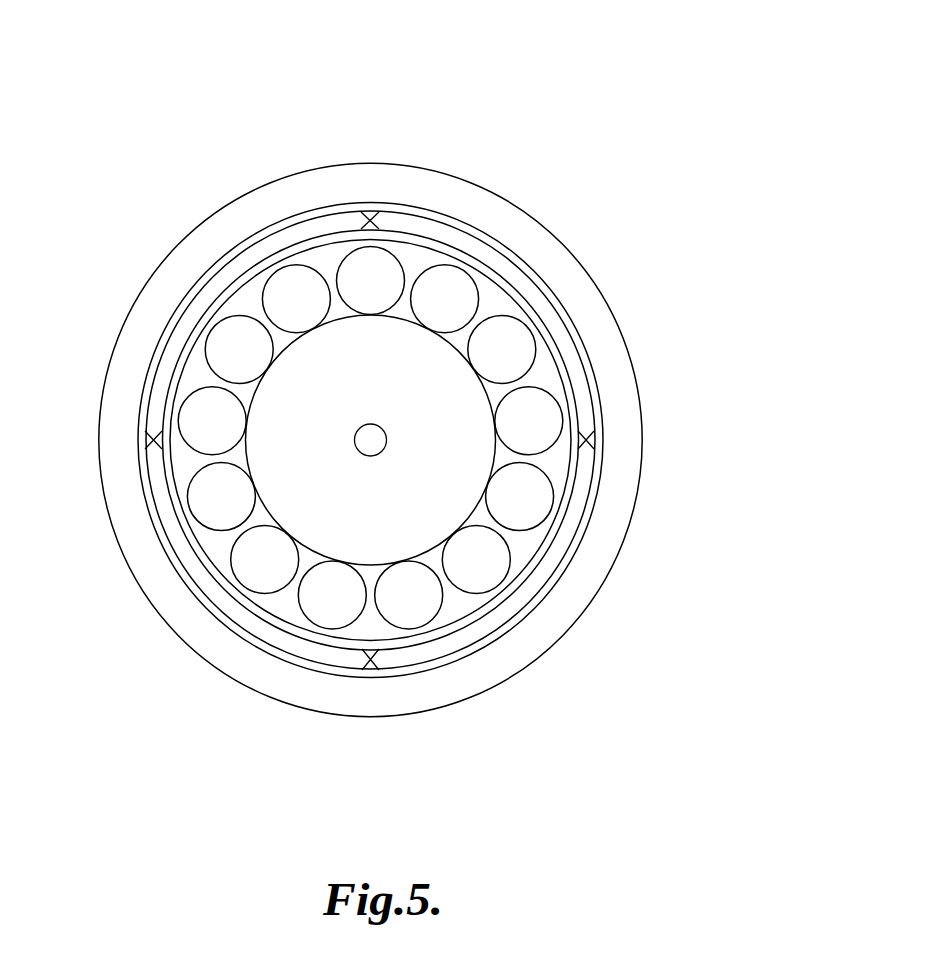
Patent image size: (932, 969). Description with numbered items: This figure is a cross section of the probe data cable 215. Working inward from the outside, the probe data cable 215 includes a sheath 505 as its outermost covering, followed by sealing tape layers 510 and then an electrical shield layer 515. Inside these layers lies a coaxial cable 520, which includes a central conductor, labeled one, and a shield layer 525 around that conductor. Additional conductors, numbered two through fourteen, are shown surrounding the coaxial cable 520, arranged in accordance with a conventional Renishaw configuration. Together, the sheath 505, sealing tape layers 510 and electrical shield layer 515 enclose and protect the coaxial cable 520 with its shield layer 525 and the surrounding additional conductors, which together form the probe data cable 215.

The probe data cable 215 is at (780, 89).
The sheath 505 is at (465, 202).
The sealing tape layers 510 is at (500, 277).
The electrical shield layer 515 is at (545, 312).
The coaxial cable 520 is at (415, 418).
The shield layer 525 is at (470, 520).